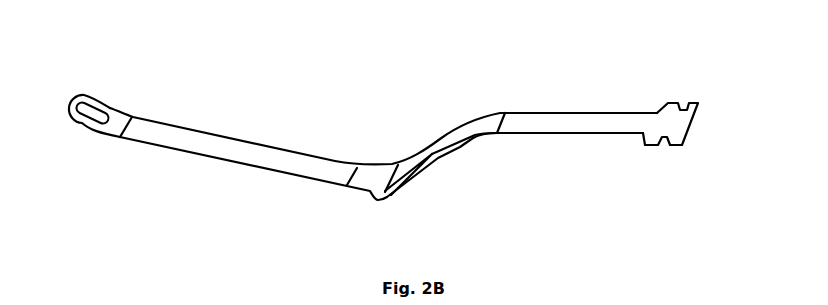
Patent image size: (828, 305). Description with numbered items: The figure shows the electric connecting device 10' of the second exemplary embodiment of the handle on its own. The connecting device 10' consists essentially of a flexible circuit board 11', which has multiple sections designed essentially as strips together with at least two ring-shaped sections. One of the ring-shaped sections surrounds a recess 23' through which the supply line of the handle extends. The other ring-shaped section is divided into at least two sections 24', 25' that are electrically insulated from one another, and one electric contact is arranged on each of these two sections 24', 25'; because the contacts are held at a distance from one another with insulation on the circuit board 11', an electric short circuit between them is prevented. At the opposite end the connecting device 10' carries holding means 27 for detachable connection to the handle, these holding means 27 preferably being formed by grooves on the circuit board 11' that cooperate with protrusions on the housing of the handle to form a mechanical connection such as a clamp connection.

The electric connecting device 10' is at (366, 109).
The flexible circuit board 11' is at (383, 154).
The recess 23' is at (408, 152).
The section 24' is at (92, 94).
The section 25' is at (73, 125).
The holding means 27 is at (682, 103).